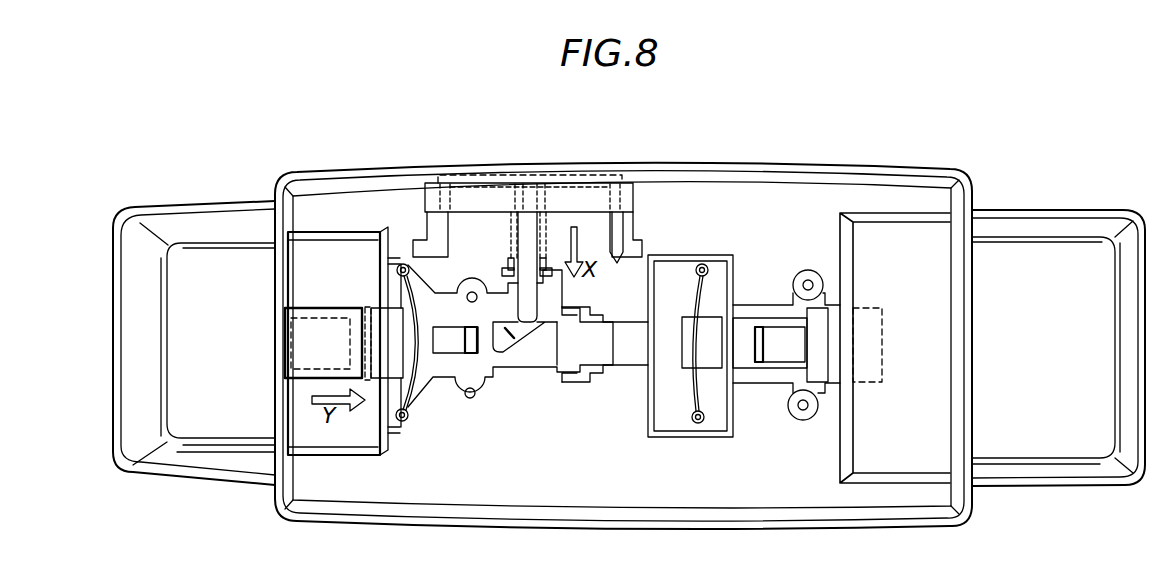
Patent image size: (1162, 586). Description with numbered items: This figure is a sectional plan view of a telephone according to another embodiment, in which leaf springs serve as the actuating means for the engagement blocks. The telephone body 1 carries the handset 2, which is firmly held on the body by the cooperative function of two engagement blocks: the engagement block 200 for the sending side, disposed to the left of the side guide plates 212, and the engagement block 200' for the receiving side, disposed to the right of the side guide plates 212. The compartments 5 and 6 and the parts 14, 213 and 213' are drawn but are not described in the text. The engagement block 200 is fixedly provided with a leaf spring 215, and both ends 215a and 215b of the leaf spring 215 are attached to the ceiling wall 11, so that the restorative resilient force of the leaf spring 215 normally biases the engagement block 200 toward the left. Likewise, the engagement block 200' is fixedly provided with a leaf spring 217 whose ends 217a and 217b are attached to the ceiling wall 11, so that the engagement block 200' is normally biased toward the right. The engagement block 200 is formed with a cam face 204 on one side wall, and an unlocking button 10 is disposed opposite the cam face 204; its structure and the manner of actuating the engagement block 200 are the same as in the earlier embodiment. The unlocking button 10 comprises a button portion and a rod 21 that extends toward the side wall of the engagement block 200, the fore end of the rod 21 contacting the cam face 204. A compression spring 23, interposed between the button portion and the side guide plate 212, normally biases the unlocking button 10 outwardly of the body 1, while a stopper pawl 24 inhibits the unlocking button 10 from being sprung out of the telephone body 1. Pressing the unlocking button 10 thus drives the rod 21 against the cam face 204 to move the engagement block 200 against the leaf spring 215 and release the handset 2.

The telephone body 1 is at (983, 167).
The handset 2 is at (1115, 205).
The compartment 5 is at (1085, 354).
The compartment 6 is at (212, 354).
The unlocking button 10 is at (562, 175).
The ceiling wall 11 is at (632, 471).
The engaging piece 14 is at (477, 348).
The rod 21 is at (523, 228).
The compression spring 23 is at (508, 248).
The stopper pawl 24 is at (617, 264).
The engagement block 200 is at (452, 381).
The engagement block 200' is at (755, 401).
The cam face 204 is at (504, 350).
The side guide plates 212 is at (615, 369).
The recess 213 is at (454, 387).
The recess 213' is at (792, 389).
The leaf spring 215 is at (398, 296).
The end of leaf spring 215a is at (393, 264).
The end of leaf spring 215b is at (399, 421).
The leaf spring 217 is at (689, 392).
The end of leaf spring 217a is at (704, 264).
The end of leaf spring 217b is at (704, 423).